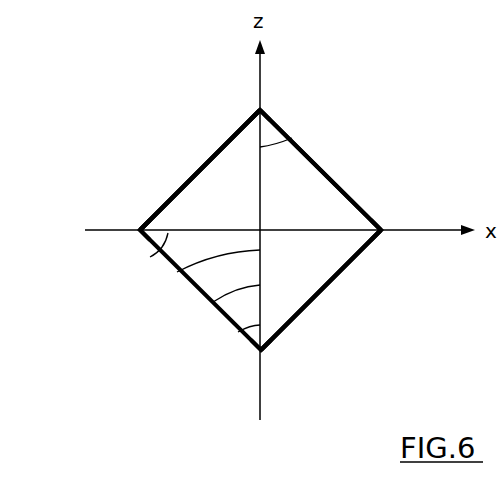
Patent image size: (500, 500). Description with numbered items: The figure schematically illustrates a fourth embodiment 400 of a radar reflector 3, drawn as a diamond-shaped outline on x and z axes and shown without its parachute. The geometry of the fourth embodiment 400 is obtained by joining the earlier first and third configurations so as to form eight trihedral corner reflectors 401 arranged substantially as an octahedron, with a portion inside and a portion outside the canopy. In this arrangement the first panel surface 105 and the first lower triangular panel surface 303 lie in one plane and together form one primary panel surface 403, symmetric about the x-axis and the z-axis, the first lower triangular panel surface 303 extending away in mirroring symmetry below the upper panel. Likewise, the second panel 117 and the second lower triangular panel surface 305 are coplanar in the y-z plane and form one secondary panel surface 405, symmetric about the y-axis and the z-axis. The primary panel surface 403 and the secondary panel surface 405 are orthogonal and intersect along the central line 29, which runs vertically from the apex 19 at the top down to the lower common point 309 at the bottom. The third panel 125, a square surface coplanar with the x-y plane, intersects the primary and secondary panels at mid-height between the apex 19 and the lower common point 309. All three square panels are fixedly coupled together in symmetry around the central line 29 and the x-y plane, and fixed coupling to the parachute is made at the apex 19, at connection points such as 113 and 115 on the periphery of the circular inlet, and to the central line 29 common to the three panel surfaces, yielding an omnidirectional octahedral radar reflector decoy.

The radar reflector 3 is at (150, 94).
The fourth embodiment 400 is at (368, 133).
The trihedral corner reflectors 401 is at (147, 128).
The primary panel surface 403 is at (180, 200).
The first panel surface 105 is at (342, 205).
The first lower triangular panel surface 303 is at (334, 262).
The apex 19 is at (260, 107).
The connection point 115 is at (385, 225).
The connection point 113 is at (139, 228).
The lower common point 309 is at (263, 352).
The second panel 117 is at (292, 138).
The third panel 125 is at (150, 257).
The central line 29 is at (177, 272).
The secondary panel surface 405 is at (213, 302).
The second lower triangular panel surface 305 is at (238, 332).